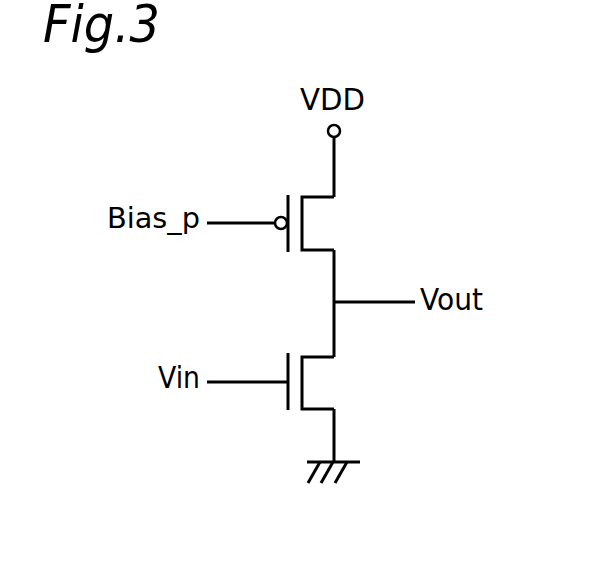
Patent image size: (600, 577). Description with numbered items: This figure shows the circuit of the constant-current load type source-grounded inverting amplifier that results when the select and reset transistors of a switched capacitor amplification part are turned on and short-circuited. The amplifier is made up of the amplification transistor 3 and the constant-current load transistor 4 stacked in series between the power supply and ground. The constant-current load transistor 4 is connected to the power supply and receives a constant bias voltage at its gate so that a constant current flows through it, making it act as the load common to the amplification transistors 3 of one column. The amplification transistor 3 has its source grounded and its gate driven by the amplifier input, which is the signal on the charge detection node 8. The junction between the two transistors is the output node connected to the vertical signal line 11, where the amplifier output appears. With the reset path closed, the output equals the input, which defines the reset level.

The constant-current load transistor 4 is at (307, 223).
The amplification transistor 3 is at (307, 383).
The vertical signal line 11 is at (334, 302).
The charge detection node 8 is at (226, 382).